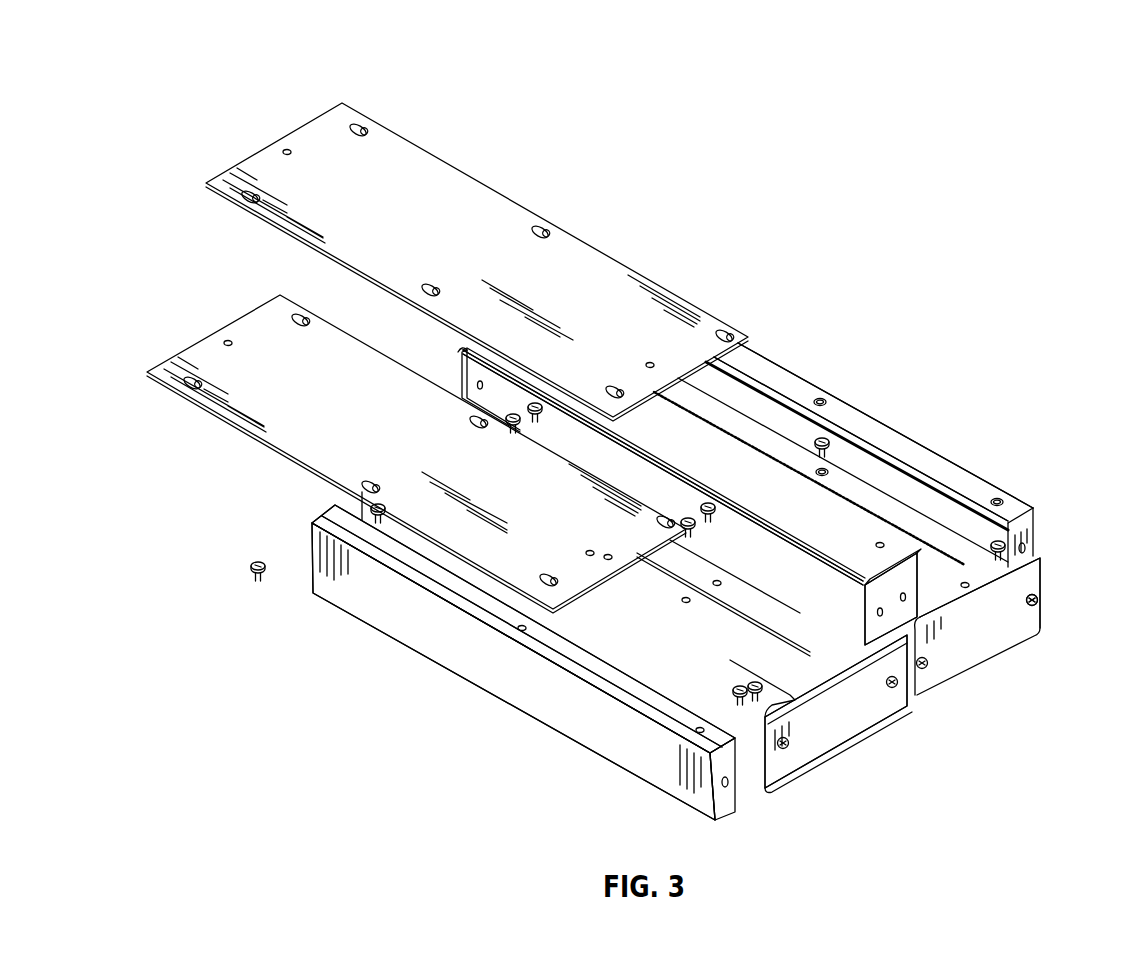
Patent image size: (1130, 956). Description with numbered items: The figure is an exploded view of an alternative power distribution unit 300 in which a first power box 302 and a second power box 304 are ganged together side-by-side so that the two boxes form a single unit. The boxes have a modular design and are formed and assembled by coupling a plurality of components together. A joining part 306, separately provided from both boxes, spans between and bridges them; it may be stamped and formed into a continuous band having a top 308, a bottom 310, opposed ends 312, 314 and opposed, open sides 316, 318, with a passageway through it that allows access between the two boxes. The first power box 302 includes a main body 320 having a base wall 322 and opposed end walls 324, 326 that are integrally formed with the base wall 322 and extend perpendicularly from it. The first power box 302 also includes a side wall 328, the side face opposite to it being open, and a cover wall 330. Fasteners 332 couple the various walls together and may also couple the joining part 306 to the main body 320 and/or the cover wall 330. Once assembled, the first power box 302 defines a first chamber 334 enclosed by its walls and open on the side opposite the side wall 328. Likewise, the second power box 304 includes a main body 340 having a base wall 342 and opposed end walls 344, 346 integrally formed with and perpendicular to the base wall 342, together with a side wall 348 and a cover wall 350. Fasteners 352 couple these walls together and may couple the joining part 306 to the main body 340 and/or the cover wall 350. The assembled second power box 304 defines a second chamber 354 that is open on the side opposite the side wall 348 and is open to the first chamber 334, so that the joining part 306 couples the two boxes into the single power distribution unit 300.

The power distribution unit 300 is at (262, 55).
The first power box 302 is at (988, 683).
The second power box 304 is at (880, 730).
The joining part 306 is at (862, 540).
The top 308 is at (845, 530).
The bottom 310 is at (750, 545).
The end 312 is at (900, 610).
The end 314 is at (477, 370).
The open side 316 is at (925, 577).
The open side 318 is at (857, 603).
The main body 320 is at (1010, 628).
The base wall 322 is at (922, 580).
The end wall 324 is at (985, 652).
The end wall 326 is at (565, 417).
The side wall 328 is at (948, 494).
The cover wall 330 is at (428, 163).
The fasteners 332 is at (822, 435).
The first chamber 334 is at (744, 401).
The main body 340 is at (640, 661).
The base wall 342 is at (598, 629).
The end wall 344 is at (783, 765).
The end wall 346 is at (368, 508).
The side wall 348 is at (435, 648).
The cover wall 350 is at (295, 447).
The fasteners 352 is at (250, 575).
The second chamber 354 is at (718, 678).